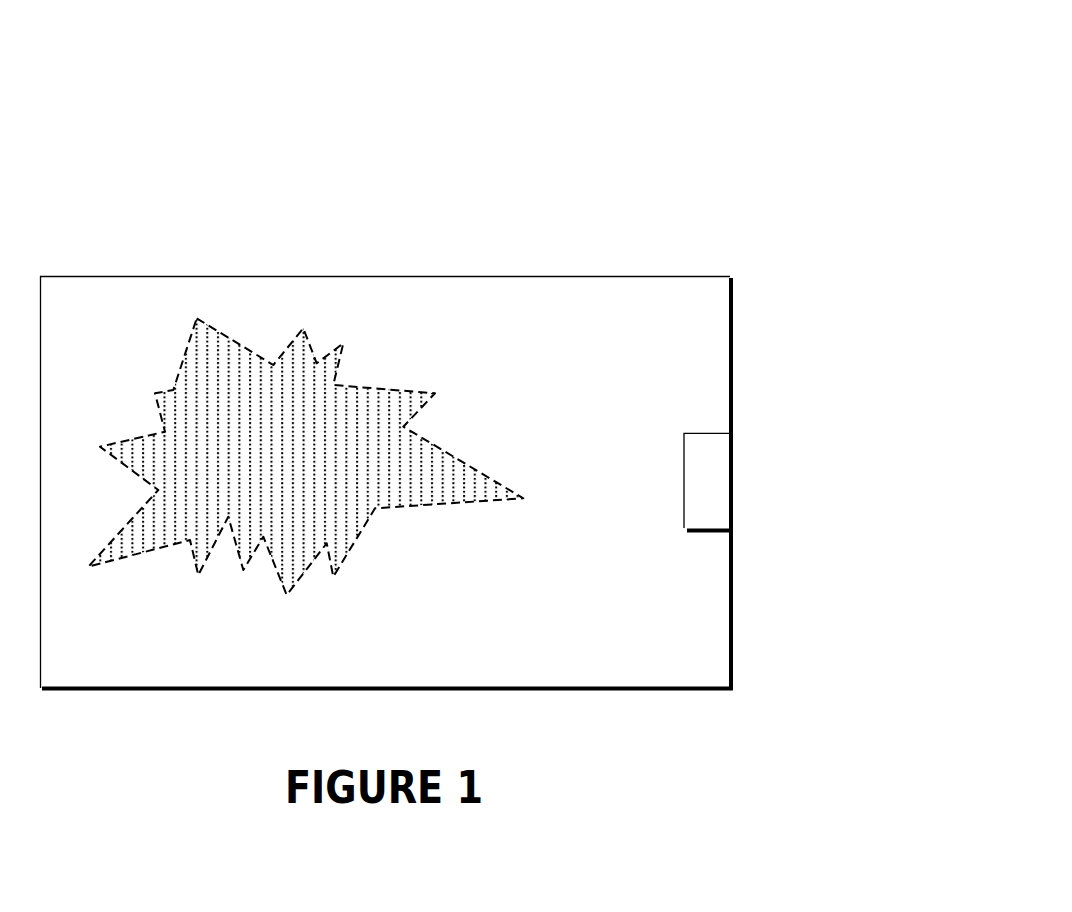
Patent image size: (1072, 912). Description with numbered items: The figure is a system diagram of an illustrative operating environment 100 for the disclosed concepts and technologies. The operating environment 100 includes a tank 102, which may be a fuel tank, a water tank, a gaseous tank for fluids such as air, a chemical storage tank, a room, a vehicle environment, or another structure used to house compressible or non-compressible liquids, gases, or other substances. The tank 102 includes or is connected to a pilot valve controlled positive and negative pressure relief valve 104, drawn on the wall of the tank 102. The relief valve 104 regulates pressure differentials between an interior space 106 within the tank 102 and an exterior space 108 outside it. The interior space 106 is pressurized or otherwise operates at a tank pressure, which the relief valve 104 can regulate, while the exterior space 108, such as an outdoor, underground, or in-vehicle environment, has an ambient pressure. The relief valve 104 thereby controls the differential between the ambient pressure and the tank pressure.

The operating environment 100 is at (938, 74).
The tank 102 is at (91, 312).
The relief valve 104 is at (717, 475).
The interior space 106 is at (297, 476).
The exterior space 108 is at (923, 320).